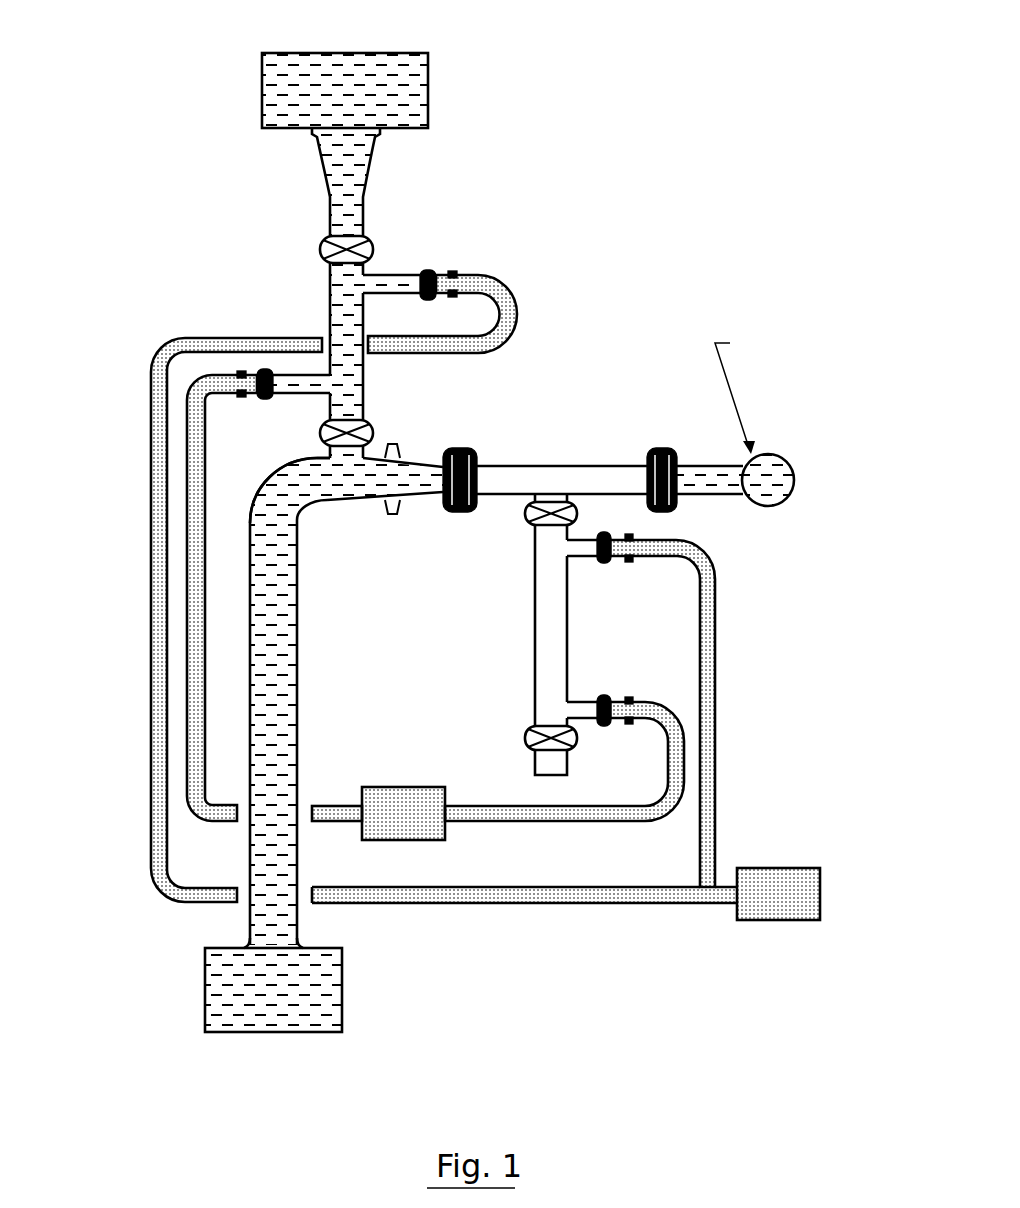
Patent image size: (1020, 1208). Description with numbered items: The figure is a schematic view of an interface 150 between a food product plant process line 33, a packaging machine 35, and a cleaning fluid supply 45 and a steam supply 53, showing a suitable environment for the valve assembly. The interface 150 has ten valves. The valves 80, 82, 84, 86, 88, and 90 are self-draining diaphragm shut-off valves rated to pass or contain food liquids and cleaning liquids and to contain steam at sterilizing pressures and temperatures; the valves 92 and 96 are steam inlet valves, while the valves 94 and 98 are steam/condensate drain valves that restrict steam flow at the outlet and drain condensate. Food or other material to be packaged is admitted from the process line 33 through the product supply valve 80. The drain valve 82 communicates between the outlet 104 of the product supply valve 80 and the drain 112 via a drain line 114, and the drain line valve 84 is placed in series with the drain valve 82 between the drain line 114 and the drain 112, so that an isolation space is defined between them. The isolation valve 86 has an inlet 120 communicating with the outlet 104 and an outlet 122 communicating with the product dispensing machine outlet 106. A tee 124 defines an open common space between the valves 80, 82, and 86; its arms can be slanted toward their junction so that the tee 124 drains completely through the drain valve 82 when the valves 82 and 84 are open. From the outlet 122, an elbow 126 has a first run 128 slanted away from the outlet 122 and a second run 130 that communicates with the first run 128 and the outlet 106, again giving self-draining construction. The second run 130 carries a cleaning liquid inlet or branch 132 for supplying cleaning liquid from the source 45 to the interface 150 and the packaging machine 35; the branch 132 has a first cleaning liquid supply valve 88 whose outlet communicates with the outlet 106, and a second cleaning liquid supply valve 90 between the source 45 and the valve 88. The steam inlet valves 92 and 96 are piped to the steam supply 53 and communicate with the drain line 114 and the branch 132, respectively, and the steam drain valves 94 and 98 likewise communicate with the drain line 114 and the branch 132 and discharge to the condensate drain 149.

The interface 150 is at (158, 197).
The cleaning fluid supply 45 is at (322, 53).
The cleaning liquid inlet or branch 132 is at (332, 215).
The second cleaning liquid supply valve 90 is at (367, 242).
The steam inlet valve 96 is at (432, 273).
The steam/condensate drain valve 98 is at (263, 397).
The first cleaning liquid supply valve 88 is at (367, 420).
The first run 128 is at (317, 458).
The elbow 126 is at (260, 493).
The second run 130 is at (298, 588).
The outlet 122 is at (420, 460).
The isolation valve 86 is at (468, 450).
The inlet 120 is at (497, 465).
The tee 124 is at (555, 466).
The outlet 104 is at (617, 466).
The product supply valve 80 is at (660, 448).
The process line 33 is at (774, 455).
The drain valve 82 is at (528, 521).
The drain line 114 is at (567, 620).
The steam inlet valve 92 is at (610, 558).
The steam/condensate drain valve 94 is at (607, 696).
The drain line valve 84 is at (535, 732).
The drain 112 is at (567, 767).
The condensate drain 149 is at (403, 787).
The steam supply 53 is at (777, 920).
The packaging machine 35 is at (205, 980).
The product dispensing machine outlet 106 is at (297, 923).